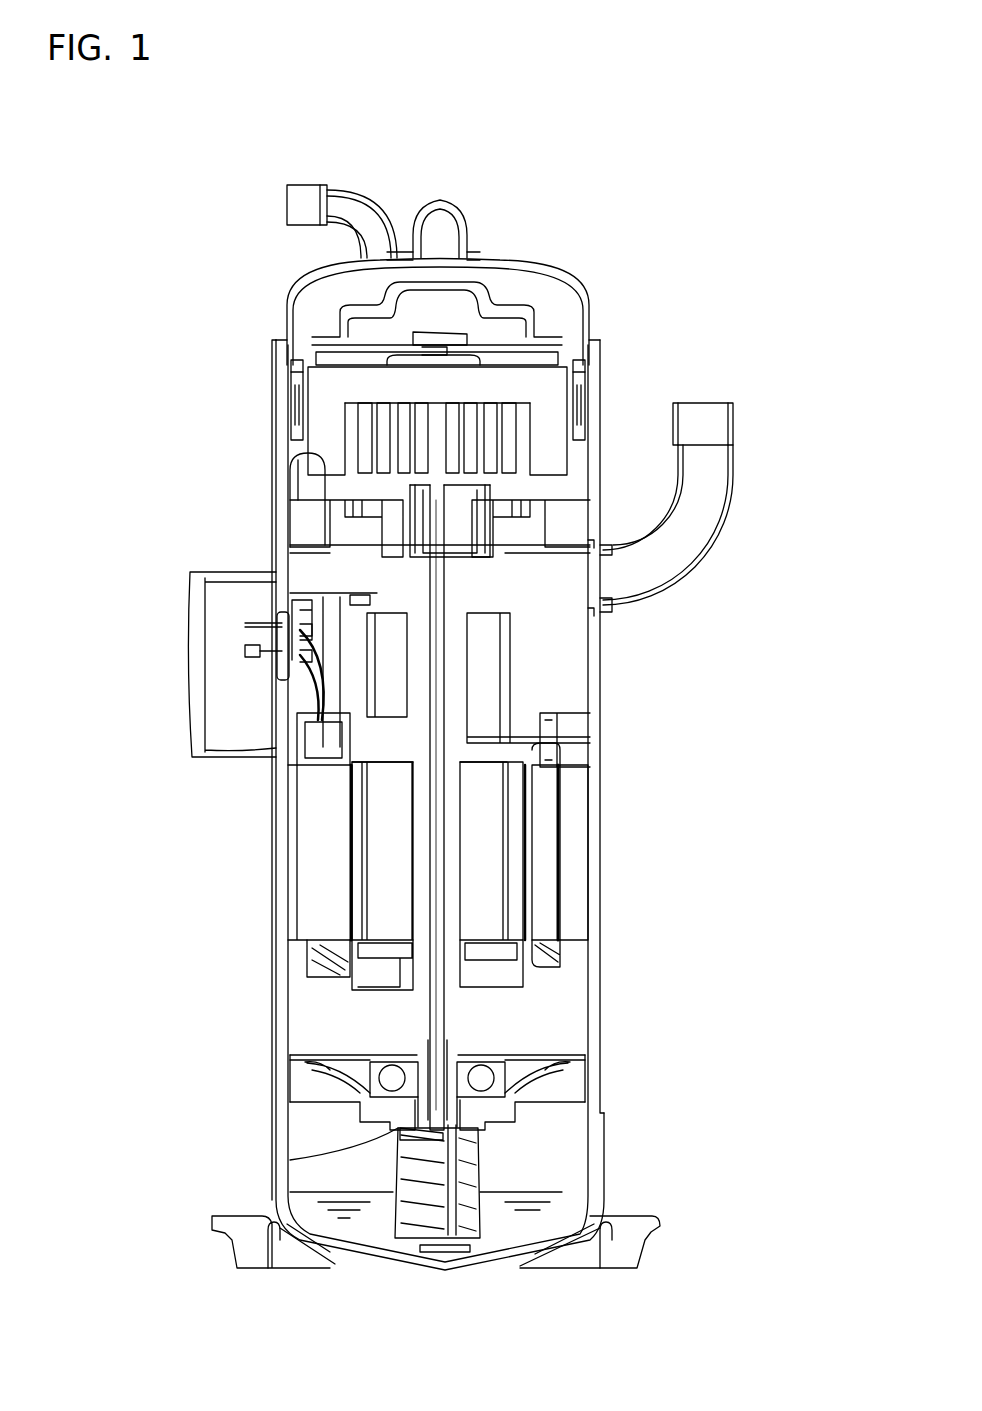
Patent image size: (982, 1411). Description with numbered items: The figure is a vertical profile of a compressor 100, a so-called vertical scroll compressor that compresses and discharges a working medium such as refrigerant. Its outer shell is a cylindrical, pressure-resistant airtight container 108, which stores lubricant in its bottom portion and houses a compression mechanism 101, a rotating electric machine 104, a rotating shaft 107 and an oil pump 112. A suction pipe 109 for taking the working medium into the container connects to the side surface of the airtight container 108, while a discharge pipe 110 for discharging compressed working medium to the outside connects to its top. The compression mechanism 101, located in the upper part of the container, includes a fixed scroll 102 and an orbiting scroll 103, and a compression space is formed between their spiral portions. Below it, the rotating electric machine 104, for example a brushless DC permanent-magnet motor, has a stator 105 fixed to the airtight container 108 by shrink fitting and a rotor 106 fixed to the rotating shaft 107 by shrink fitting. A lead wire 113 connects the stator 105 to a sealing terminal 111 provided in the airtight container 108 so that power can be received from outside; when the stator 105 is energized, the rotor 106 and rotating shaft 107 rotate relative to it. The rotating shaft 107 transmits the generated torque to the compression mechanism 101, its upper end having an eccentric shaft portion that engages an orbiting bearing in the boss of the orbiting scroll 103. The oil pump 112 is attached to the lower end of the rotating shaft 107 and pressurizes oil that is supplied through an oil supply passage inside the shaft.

The compressor 100 is at (647, 290).
The compression mechanism 101 is at (222, 325).
The fixed scroll 102 is at (337, 390).
The orbiting scroll 103 is at (325, 470).
The rotating electric machine 104 is at (222, 830).
The stator 105 is at (325, 810).
The rotor 106 is at (380, 845).
The rotating shaft 107 is at (423, 987).
The airtight container 108 is at (595, 658).
The suction pipe 109 is at (653, 583).
The discharge pipe 110 is at (310, 218).
The sealing terminal 111 is at (280, 613).
The oil pump 112 is at (395, 1183).
The lead wire 113 is at (313, 660).